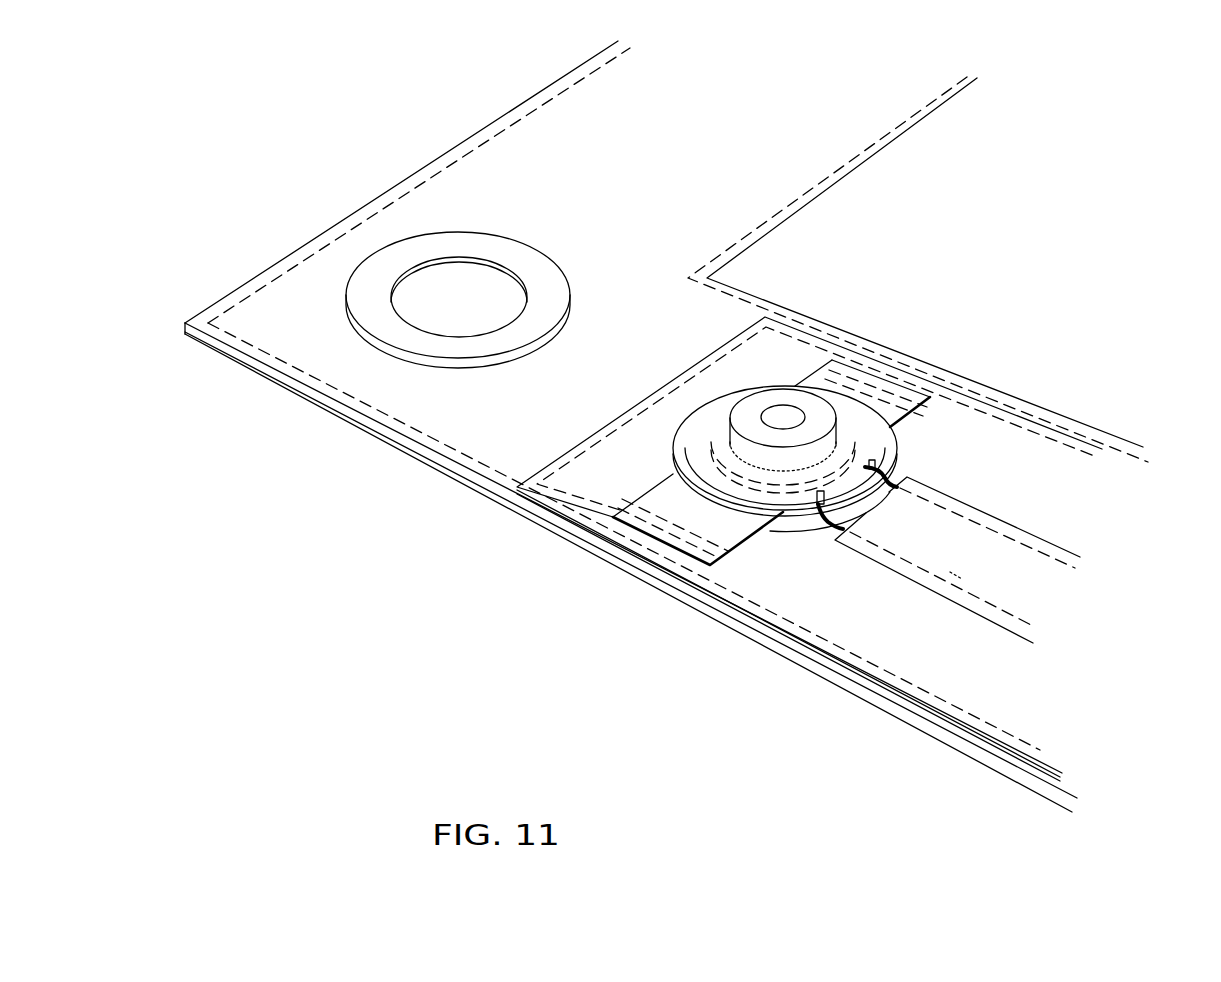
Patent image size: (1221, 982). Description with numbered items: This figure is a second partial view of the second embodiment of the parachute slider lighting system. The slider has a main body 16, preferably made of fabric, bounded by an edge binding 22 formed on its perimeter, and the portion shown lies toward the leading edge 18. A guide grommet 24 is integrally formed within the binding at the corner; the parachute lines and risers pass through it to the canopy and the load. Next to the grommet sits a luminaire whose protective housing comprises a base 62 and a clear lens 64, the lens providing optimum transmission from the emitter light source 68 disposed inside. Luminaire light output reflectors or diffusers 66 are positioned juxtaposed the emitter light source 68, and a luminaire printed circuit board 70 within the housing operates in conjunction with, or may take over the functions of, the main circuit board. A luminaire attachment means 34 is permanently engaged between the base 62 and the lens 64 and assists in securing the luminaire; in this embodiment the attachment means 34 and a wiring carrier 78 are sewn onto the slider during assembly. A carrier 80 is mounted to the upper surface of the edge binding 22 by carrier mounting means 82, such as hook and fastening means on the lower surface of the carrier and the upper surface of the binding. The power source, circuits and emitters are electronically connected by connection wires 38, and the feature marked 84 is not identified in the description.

The main body 16 is at (917, 195).
The leading edge 18 is at (322, 400).
The edge binding 22 is at (523, 172).
The guide grommet 24 is at (377, 257).
The luminaire attachment means 34 is at (670, 547).
The connection wires 38 is at (885, 452).
The base 62 is at (797, 532).
The lens 64 is at (717, 410).
The luminaire light output reflectors or diffusers 66 is at (865, 380).
The emitter light source 68 is at (768, 388).
The luminaire printed circuit board 70 is at (757, 492).
The wiring carrier 78 is at (1050, 538).
The carrier 80 is at (607, 422).
The carrier mounting means 82 is at (957, 727).
The adhesive region 84 is at (963, 567).